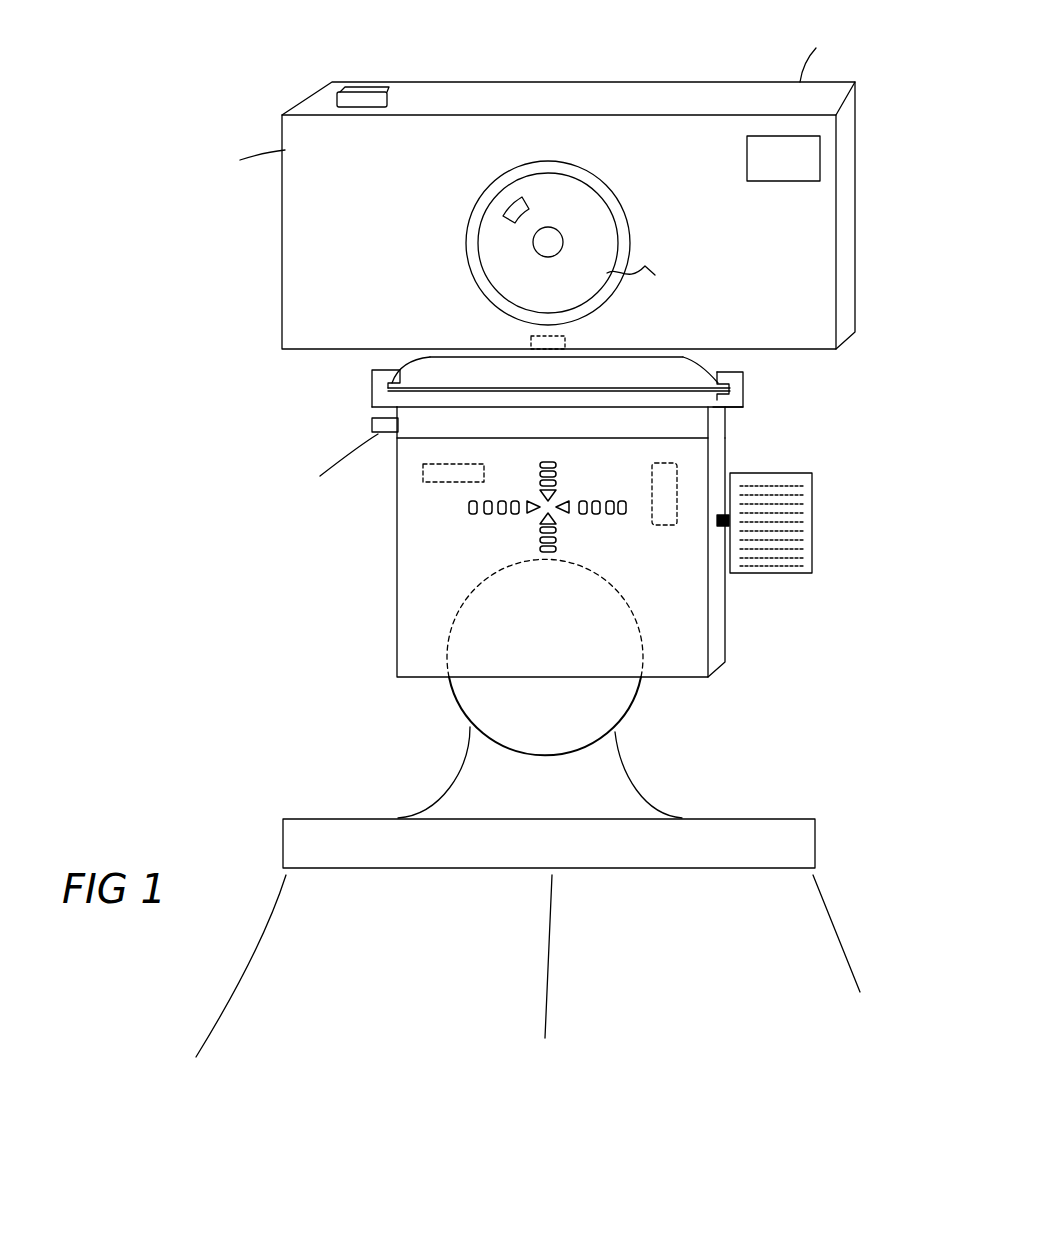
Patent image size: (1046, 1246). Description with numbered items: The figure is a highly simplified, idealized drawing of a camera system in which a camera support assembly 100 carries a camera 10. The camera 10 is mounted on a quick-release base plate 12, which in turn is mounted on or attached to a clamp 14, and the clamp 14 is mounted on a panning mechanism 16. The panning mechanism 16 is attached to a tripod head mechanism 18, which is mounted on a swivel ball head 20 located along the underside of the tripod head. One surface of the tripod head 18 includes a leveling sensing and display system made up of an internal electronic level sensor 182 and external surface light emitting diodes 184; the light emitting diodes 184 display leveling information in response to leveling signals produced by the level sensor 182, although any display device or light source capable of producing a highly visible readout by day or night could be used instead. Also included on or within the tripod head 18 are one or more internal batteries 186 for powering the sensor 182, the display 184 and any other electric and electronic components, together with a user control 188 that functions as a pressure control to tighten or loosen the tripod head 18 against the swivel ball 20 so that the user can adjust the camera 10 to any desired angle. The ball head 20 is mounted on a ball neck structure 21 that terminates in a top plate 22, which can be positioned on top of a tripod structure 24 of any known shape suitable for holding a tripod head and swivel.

The camera support assembly 100 is at (196, 393).
The camera 10 is at (822, 243).
The base plate 12 is at (735, 362).
The clamp 14 is at (740, 395).
The panning mechanism 16 is at (698, 428).
The tripod head mechanism 18 is at (700, 620).
The swivel ball head 20 is at (633, 703).
The ball neck structure 21 is at (627, 782).
The top plate 22 is at (807, 843).
The tripod structure 24 is at (220, 1027).
The internal electronic level sensor 182 is at (432, 484).
The external surface light emitting diodes 184 is at (538, 507).
The internal batteries 186 is at (677, 473).
The user control 188 is at (812, 540).